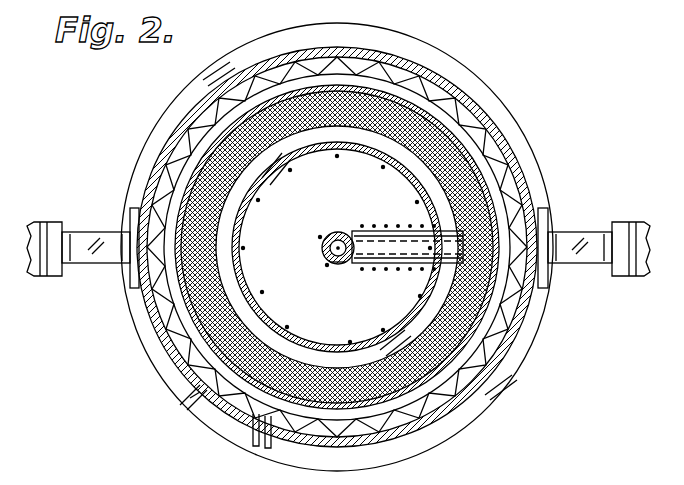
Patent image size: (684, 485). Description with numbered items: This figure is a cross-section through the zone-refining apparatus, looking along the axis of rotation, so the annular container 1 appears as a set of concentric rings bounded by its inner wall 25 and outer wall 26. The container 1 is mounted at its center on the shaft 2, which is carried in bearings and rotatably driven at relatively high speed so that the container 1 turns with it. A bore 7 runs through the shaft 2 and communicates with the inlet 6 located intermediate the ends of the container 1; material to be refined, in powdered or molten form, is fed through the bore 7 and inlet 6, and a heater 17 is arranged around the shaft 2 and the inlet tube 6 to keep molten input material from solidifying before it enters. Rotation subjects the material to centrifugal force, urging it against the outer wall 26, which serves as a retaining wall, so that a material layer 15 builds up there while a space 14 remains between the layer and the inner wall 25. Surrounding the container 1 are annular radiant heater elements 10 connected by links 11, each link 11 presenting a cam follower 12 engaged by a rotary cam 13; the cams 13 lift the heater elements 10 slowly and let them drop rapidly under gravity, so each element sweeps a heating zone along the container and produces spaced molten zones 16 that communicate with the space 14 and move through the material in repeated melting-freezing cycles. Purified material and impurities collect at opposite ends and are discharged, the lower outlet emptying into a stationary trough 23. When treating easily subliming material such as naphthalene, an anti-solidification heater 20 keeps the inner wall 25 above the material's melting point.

The annular container 1 is at (472, 138).
The shaft 2 is at (331, 232).
The inlet 6 is at (502, 334).
The bore 7 is at (336, 265).
The annular radiant heater elements 10 is at (512, 184).
The links 11 is at (131, 206).
The cam follower 12 is at (90, 240).
The rotary cam 13 is at (47, 222).
The space 14 is at (196, 396).
The material layer 15 is at (180, 364).
The molten zones 16 is at (300, 134).
The heater 17 is at (378, 227).
The anti-solidification heater 20 is at (262, 290).
The stationary trough 23 is at (493, 386).
The inner wall 25 is at (362, 138).
The outer wall 26 is at (398, 98).